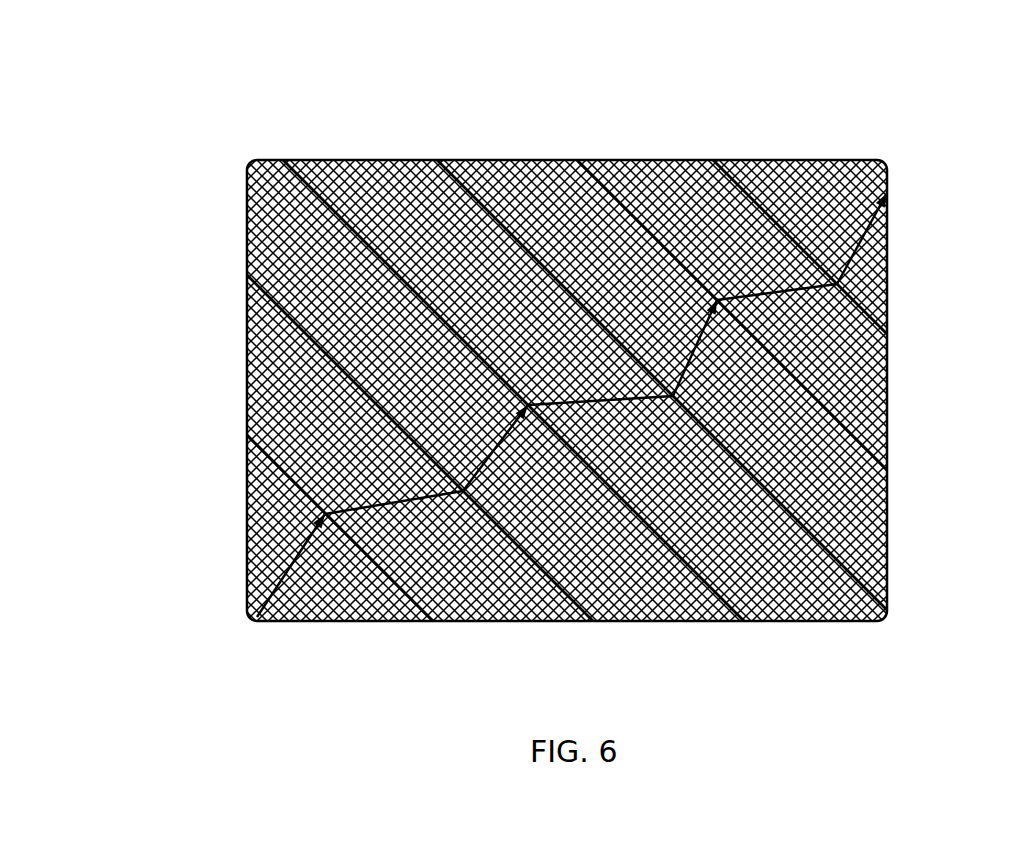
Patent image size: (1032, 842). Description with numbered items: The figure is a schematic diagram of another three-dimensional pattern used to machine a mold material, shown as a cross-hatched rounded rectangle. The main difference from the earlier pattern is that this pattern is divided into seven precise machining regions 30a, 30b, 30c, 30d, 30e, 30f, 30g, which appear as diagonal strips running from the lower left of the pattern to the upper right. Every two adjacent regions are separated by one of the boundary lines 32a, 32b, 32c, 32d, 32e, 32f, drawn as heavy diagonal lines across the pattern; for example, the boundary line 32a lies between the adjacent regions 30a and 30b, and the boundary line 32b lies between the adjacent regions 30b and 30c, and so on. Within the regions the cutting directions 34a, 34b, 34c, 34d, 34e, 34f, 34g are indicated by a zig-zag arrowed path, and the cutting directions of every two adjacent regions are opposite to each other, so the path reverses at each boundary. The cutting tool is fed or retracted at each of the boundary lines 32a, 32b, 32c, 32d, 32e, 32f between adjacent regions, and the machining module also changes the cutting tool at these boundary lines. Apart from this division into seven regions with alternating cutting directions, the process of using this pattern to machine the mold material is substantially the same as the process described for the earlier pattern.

The precise machining region 30a is at (329, 593).
The precise machining region 30b is at (483, 603).
The precise machining region 30c is at (632, 605).
The precise machining region 30d is at (785, 622).
The precise machining region 30e is at (878, 508).
The precise machining region 30f is at (872, 410).
The precise machining region 30g is at (878, 283).
The boundary line 32a is at (403, 593).
The boundary line 32b is at (568, 596).
The boundary line 32c is at (712, 596).
The boundary line 32d is at (848, 596).
The boundary line 32e is at (870, 470).
The boundary line 32f is at (873, 305).
The cutting direction 34a is at (290, 570).
The cutting direction 34b is at (403, 503).
The cutting direction 34c is at (495, 447).
The cutting direction 34d is at (627, 397).
The cutting direction 34e is at (693, 352).
The cutting direction 34f is at (800, 303).
The cutting direction 34g is at (862, 250).